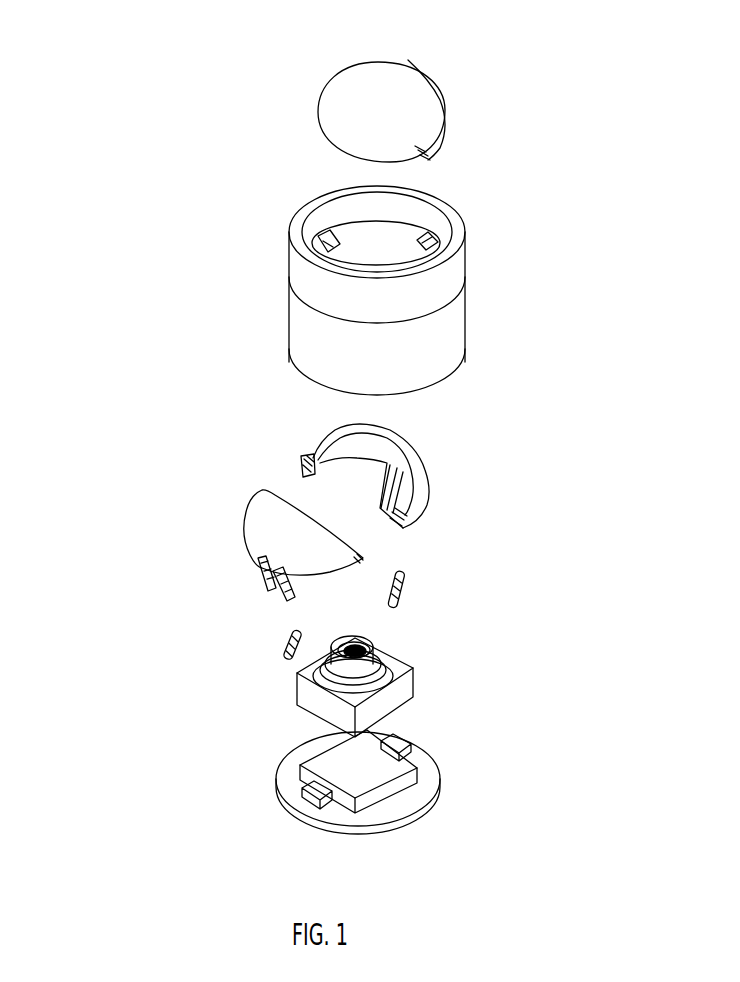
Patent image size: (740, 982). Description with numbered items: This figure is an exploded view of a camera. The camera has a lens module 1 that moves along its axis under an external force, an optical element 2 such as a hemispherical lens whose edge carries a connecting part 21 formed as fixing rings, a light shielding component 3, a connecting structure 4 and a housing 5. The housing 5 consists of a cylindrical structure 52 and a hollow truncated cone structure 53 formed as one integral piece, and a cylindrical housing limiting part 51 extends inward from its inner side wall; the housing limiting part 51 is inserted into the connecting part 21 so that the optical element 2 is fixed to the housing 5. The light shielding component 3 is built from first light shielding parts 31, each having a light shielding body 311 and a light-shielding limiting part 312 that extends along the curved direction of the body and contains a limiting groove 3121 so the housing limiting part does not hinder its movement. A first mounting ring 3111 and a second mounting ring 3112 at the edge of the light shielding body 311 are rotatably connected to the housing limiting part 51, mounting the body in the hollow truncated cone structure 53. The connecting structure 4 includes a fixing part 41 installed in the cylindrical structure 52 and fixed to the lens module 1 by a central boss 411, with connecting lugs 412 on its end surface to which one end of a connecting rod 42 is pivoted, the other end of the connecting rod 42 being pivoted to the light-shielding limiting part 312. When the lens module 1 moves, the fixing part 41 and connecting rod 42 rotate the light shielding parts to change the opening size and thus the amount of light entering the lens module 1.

The lens module 1 is at (404, 702).
The optical element 2 is at (418, 97).
The connecting part 21 is at (437, 94).
The light shielding component 3 is at (418, 453).
The first light shielding part 31 is at (122, 470).
The light shielding body 311 is at (254, 508).
The light-shielding limiting part 312 is at (258, 565).
The limiting groove 3121 is at (262, 590).
The first mounting ring 3111 is at (412, 533).
The second mounting ring 3112 is at (305, 456).
The connecting structure 4 is at (180, 688).
The fixing part 41 is at (288, 768).
The connecting rod 42 is at (287, 640).
The boss 411 is at (373, 777).
The connecting lug 412 is at (311, 810).
The housing 5 is at (182, 150).
The housing limiting part 51 is at (323, 238).
The cylindrical structure 52 is at (295, 330).
The hollow truncated cone structure 53 is at (296, 266).